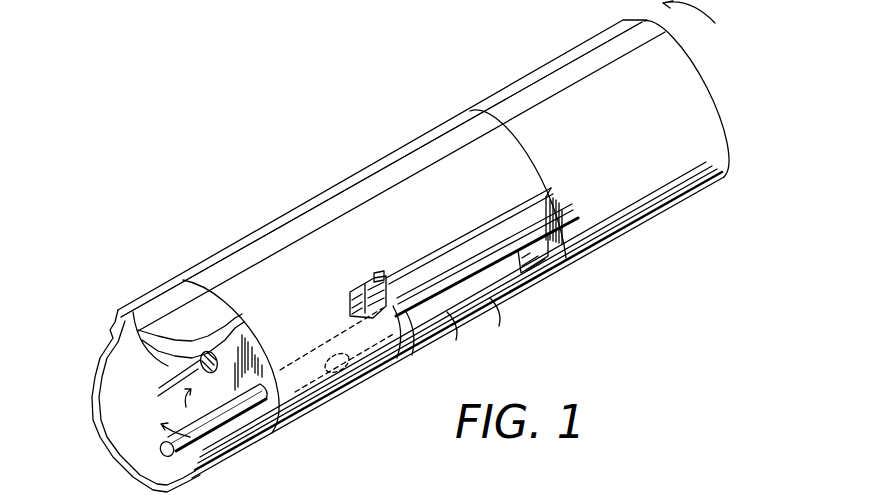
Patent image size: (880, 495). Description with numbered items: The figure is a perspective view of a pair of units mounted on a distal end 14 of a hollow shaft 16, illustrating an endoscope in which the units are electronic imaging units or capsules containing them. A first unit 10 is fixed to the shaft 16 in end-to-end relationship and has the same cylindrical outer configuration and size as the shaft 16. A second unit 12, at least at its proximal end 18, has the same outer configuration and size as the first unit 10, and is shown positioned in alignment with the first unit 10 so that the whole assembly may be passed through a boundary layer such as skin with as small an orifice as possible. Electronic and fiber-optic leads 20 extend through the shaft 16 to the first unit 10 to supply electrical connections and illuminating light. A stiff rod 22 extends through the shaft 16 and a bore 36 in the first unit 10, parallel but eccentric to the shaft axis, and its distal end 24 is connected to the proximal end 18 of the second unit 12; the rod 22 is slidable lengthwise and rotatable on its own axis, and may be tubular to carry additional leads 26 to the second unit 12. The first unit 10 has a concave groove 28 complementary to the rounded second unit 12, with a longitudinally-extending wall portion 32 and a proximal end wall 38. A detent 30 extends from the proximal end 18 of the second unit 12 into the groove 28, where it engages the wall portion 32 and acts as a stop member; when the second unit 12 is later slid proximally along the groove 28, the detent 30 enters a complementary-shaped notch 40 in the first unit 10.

The first unit 10 is at (348, 220).
The second unit 12 is at (560, 80).
The distal end 14 is at (237, 293).
The hollow shaft 16 is at (98, 366).
The proximal end 18 is at (458, 118).
The electronic and fiber-optic leads 20 is at (162, 375).
The stiff rod 22 is at (237, 410).
The distal end 24 is at (548, 227).
The electronic and/or fiber-optic leads 26 is at (147, 450).
The groove 28 is at (450, 317).
The detent 30 is at (546, 272).
The longitudinally-extending wall portion 32 is at (490, 303).
The bore 36 is at (352, 372).
The proximal end wall 38 is at (359, 361).
The notch 40 is at (362, 283).